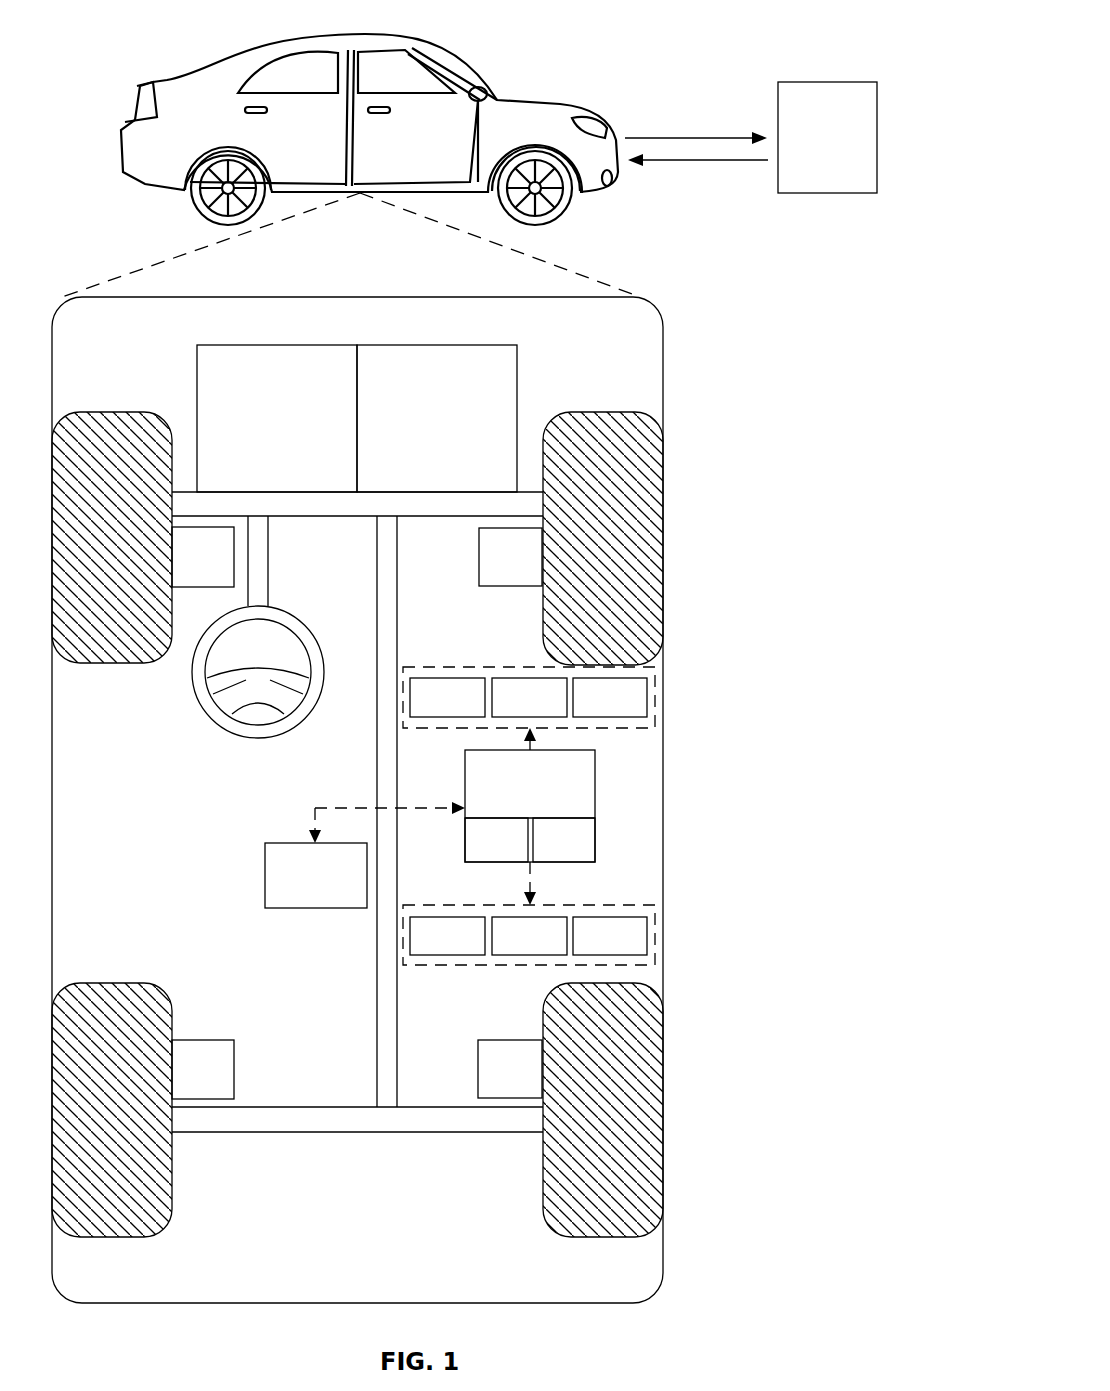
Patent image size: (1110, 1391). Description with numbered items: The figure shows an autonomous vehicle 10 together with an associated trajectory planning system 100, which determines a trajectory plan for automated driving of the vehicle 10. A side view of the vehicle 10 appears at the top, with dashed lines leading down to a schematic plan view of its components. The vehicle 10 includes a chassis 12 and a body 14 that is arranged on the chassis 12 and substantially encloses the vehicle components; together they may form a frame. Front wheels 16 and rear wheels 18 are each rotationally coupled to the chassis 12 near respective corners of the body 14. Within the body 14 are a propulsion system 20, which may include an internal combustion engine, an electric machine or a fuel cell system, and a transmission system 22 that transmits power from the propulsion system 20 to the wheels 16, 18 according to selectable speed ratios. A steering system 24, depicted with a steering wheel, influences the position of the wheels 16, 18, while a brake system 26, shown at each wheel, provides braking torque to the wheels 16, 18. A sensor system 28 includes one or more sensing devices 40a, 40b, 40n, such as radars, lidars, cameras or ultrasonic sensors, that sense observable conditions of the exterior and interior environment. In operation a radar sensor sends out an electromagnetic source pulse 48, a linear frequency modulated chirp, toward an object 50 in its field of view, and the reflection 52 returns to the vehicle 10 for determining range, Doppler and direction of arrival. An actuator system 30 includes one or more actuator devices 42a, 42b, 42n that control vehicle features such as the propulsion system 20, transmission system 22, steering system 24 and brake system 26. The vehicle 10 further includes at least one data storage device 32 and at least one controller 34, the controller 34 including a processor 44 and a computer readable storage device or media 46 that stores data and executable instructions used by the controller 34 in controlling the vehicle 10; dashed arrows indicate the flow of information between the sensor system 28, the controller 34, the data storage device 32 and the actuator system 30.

The vehicle 10 is at (125, 117).
The chassis 12 is at (377, 1078).
The body 14 is at (664, 347).
The front wheels 16 is at (720, 482).
The rear wheels 18 is at (110, 1238).
The propulsion system 20 is at (263, 461).
The transmission system 22 is at (423, 461).
The steering system 24 is at (279, 541).
The brake system 26 is at (232, 1155).
The sensor system 28 is at (584, 695).
The actuator system 30 is at (535, 1063).
The data storage device 32 is at (265, 868).
The controller 34 is at (555, 846).
The sensing device 40a is at (405, 690).
The sensing device 40b is at (532, 678).
The sensing device 40n is at (648, 697).
The actuator device 42a is at (410, 935).
The actuator device 42b is at (505, 958).
The actuator device 42n is at (648, 952).
The processor 44 is at (465, 838).
The computer readable storage device or media 46 is at (596, 830).
The electromagnetic source pulse 48 is at (697, 136).
The object 50 is at (832, 82).
The reflection 52 is at (697, 162).
The trajectory planning system 100 is at (670, 289).